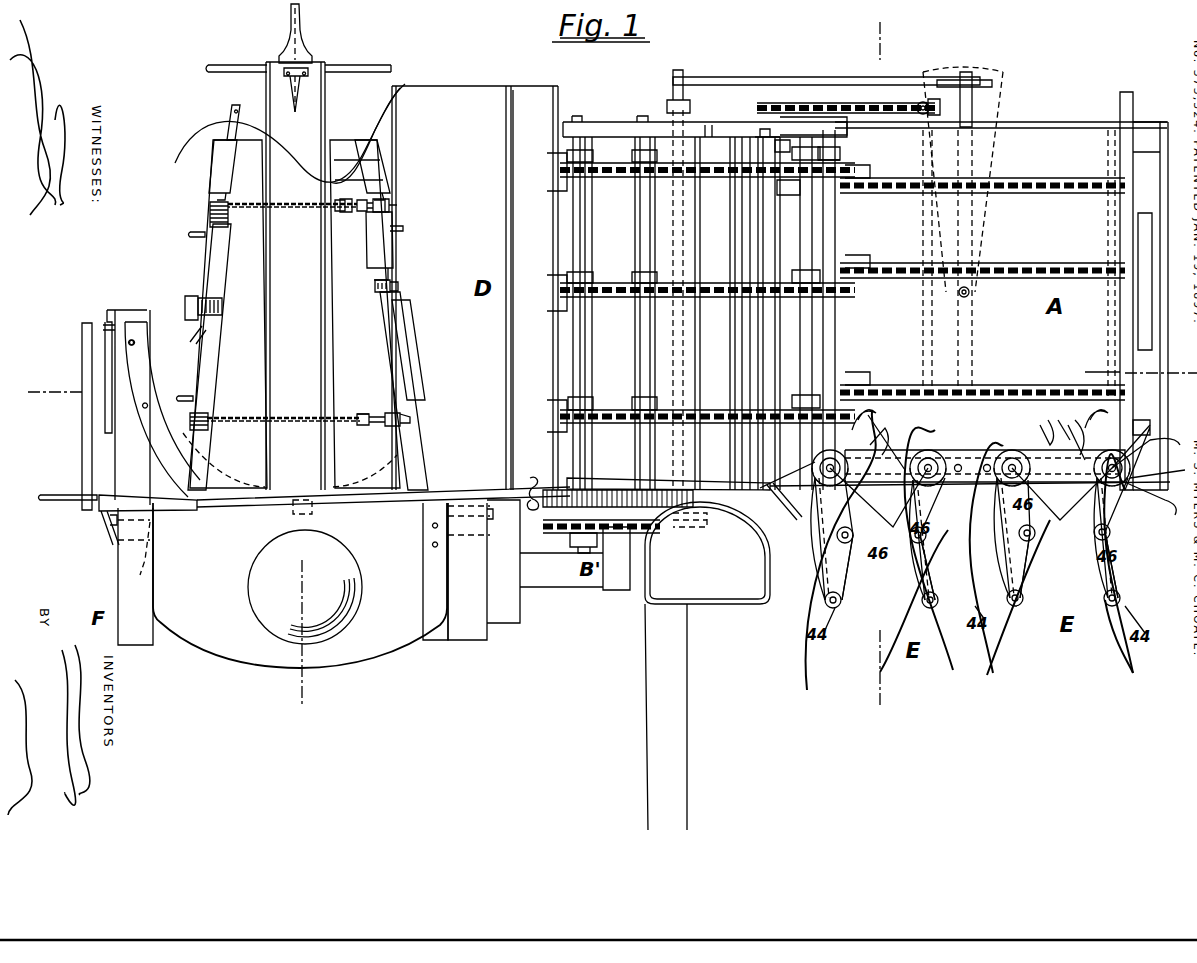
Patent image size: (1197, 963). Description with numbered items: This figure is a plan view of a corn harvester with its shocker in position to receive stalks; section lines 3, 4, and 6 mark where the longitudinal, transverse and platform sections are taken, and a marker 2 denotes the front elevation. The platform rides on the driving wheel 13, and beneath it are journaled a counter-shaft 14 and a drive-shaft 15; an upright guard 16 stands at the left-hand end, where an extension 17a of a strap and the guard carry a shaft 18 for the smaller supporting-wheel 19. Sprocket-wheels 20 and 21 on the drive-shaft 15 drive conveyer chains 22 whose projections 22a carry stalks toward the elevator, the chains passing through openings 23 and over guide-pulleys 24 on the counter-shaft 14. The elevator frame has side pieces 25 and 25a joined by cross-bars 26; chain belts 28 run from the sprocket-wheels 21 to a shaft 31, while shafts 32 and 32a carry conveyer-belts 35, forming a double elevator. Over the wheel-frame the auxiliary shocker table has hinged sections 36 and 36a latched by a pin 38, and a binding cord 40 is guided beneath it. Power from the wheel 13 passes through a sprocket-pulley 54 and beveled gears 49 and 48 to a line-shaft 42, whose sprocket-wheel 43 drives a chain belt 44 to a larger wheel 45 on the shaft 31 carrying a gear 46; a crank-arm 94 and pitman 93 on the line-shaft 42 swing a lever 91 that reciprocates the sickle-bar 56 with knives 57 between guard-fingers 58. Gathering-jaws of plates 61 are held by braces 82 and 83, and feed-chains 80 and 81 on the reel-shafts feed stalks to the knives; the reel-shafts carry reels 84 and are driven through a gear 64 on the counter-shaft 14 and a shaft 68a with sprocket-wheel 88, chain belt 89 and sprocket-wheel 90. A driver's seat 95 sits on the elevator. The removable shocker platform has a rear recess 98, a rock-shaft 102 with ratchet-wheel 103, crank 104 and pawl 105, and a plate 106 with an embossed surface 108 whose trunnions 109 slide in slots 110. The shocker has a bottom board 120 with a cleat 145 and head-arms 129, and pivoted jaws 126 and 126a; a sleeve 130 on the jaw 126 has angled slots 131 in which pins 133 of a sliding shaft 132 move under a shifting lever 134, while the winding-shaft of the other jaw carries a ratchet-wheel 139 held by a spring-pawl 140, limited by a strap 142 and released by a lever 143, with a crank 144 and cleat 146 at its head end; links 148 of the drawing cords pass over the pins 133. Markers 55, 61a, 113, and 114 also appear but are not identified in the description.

The section line 2- 2 is at (1161, 376).
The section line 3 3 is at (48, 394).
The section line 4 4 is at (291, 357).
The section line 6 6 is at (886, 369).
The main or driving wheel 13 is at (1165, 338).
The counter-shaft 14 is at (1108, 330).
The drive-shaft 15 is at (762, 130).
The upright guard 16 is at (1127, 205).
The forward extension of strap 17a is at (1135, 525).
The shaft 18 is at (1158, 288).
The supporting-wheel 19 is at (1150, 247).
The sprocket-wheel 20 is at (795, 250).
The sprocket-wheel 21 is at (793, 150).
The conveyer chains 22 is at (1025, 180).
The projections 22a is at (920, 182).
The openings 23 is at (1108, 178).
The guide-pulleys 24 is at (680, 313).
The side piece 25 is at (592, 125).
The rear side piece 25a is at (773, 126).
The cross-bars 26 is at (742, 395).
The chain belts 28 is at (608, 182).
The elevator-shaft 31 is at (583, 355).
The lower shaft 32 is at (840, 348).
The upper shaft 32a is at (650, 335).
The conveyer-belts 35 is at (737, 178).
The lower section of auxiliary shocker 36 is at (475, 288).
The upper section of auxiliary shocker 36a is at (540, 288).
The pin 38 is at (536, 484).
The binding thread or cord 40 is at (386, 108).
The line-shaft 42 is at (680, 228).
The sprocket-wheel 43 is at (700, 522).
The chain belt 44 is at (608, 570).
The larger wheel 45 is at (570, 545).
The gear 46 is at (612, 490).
The beveled gear 48 is at (855, 535).
The beveled gear 49 is at (826, 606).
The sprocket-pulley 54 is at (1062, 421).
The spring finger 55 is at (963, 428).
The sickle-bar 56 is at (998, 450).
The knives 57 is at (1079, 429).
The guard-fingers 58 is at (980, 439).
The vertical plates 61 is at (1098, 585).
The picker arm 61a is at (969, 554).
The gear 64 is at (1143, 420).
The line-shaft 68a is at (951, 309).
The endless chain 80 is at (971, 539).
The second belt 81 is at (820, 560).
The braces 82 is at (930, 575).
The brace 83 is at (784, 508).
The reel 84 is at (975, 474).
The sprocket-wheel 88 is at (928, 110).
The chain belt 89 is at (880, 110).
The sprocket-wheel 90 is at (770, 149).
The lever 91 is at (973, 96).
The pitman 93 is at (826, 88).
The crank-arm 94 is at (672, 100).
The driver's seat 95 is at (707, 666).
The recess 98 is at (150, 398).
The rock-shaft 102 is at (407, 340).
The ratchet-wheel 103 is at (118, 362).
The crank 104 is at (86, 440).
The pawl 105 is at (132, 407).
The plate 106 is at (300, 585).
The embossed surface 108 is at (305, 587).
The trunnions 109 is at (152, 529).
The slots 110 is at (145, 580).
The spring 113 is at (190, 418).
The beam 114 is at (176, 503).
The bottom plate or board 120 is at (295, 276).
The shocker jaw 126 is at (365, 314).
The shocker jaw 126a is at (225, 314).
The upwardly-curved arm 129 is at (268, 67).
The sleeve 130 is at (361, 246).
The angled slot 131 is at (395, 205).
The shaft 132 is at (375, 286).
The pins 133 is at (400, 210).
The shifting lever 134 is at (399, 288).
The ratchet-wheel 139 is at (226, 300).
The spring-pawl 140 is at (204, 296).
The strap 142 is at (185, 306).
The lever 143 is at (187, 340).
The crank 144 is at (302, 211).
The spring-cleat 145 is at (297, 101).
The cleat 146 is at (228, 113).
The links 148 is at (364, 218).